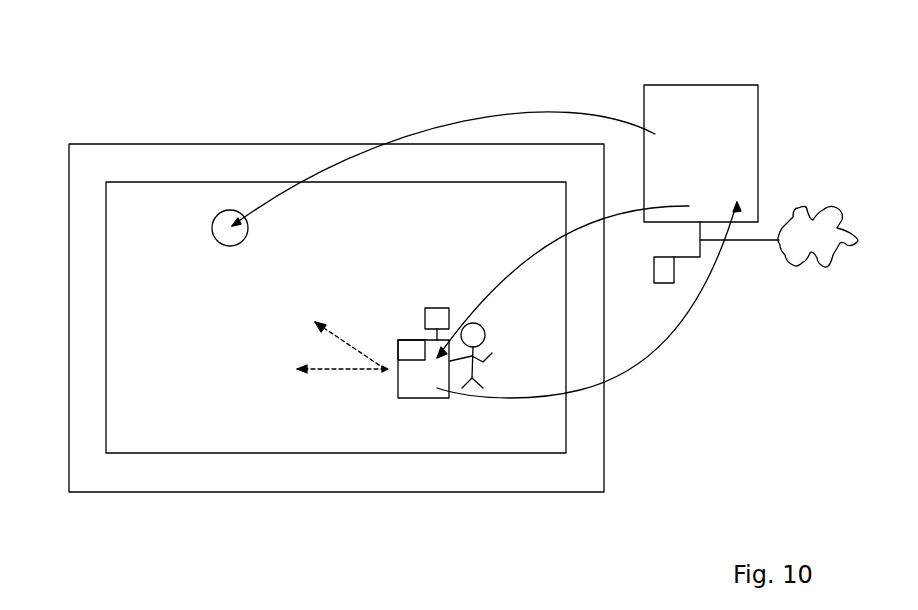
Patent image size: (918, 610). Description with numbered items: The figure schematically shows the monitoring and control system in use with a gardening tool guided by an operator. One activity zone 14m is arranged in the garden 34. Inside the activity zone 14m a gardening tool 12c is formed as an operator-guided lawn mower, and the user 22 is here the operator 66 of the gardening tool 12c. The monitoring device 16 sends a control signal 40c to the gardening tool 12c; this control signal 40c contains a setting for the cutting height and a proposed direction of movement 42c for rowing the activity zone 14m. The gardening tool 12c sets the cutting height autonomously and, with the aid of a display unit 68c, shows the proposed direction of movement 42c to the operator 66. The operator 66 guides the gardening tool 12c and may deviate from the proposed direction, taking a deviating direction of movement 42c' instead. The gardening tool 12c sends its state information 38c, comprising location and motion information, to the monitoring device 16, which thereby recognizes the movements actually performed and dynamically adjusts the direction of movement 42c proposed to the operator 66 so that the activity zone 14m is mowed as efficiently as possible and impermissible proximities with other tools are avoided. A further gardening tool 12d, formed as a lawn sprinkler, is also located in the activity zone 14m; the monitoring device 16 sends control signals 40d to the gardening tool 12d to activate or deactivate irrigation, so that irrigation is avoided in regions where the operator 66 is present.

The garden 34 is at (69, 395).
The activity zone 14m is at (248, 455).
The gardening tool 12d is at (232, 210).
The control signals 40d is at (480, 112).
The monitoring device 16 is at (757, 143).
The control signal 40c is at (497, 265).
The state information 38c is at (662, 352).
The gardening tool 12c is at (427, 400).
The display unit 68c is at (445, 316).
The proposed direction of movement 42c is at (342, 402).
The deviating direction of movement 42c' is at (347, 312).
The user 22 is at (592, 386).
The operator 66 is at (477, 368).